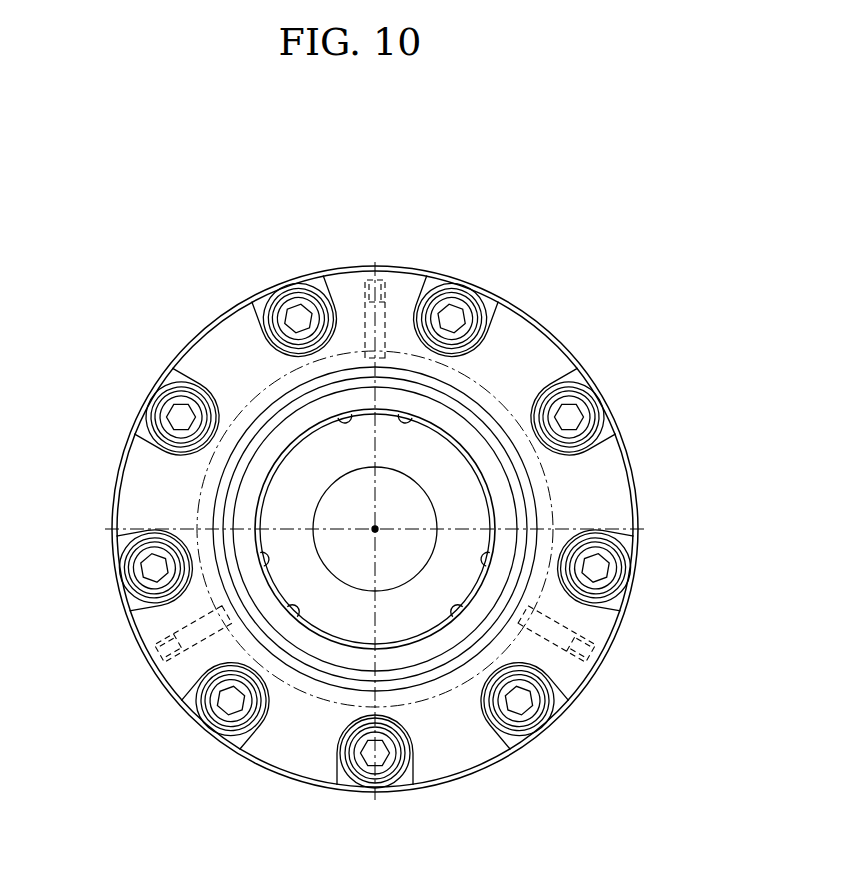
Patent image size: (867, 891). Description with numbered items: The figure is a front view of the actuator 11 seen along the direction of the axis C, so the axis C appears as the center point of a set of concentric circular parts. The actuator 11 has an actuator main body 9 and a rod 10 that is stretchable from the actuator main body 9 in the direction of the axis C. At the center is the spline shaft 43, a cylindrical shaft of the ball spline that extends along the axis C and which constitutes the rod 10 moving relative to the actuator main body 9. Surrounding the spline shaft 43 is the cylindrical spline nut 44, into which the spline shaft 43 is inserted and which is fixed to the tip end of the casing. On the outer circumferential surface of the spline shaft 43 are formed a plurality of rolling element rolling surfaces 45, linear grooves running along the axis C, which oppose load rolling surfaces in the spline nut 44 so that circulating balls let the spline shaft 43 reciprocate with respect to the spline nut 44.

The actuator main body 9 is at (546, 314).
The rod 10 is at (248, 490).
The actuator 11 is at (614, 169).
The spline shaft 43 is at (297, 465).
The spline nut 44 is at (507, 503).
The rolling element rolling surfaces 45 is at (377, 278).
The axis C is at (376, 528).